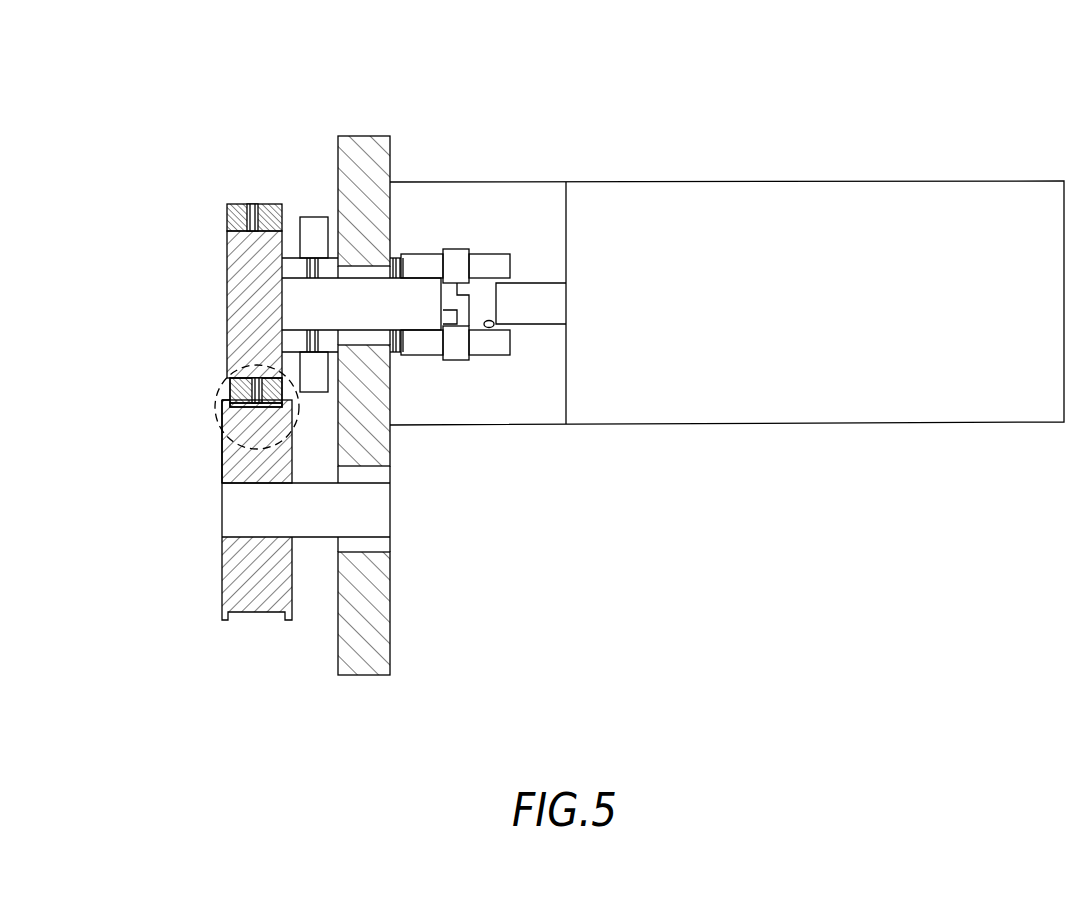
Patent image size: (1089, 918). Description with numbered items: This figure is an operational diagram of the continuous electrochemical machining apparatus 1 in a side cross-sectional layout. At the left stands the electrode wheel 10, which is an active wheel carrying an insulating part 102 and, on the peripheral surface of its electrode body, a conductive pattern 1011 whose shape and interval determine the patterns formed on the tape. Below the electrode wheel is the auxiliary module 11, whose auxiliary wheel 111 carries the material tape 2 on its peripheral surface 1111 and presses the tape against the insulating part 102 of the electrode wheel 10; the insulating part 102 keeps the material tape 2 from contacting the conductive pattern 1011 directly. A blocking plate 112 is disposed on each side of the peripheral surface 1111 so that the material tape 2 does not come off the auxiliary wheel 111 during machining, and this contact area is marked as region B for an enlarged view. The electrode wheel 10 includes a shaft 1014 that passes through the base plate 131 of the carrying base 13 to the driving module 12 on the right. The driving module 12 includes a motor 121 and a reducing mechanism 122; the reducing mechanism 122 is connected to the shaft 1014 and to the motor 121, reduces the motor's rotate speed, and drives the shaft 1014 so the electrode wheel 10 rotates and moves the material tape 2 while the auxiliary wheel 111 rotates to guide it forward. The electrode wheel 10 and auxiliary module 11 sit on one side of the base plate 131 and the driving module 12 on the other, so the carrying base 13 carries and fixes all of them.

The continuous electrochemical machining apparatus 1 is at (1052, 35).
The electrode wheel 10 is at (222, 192).
The auxiliary module 11 is at (187, 510).
The driving module 12 is at (815, 165).
The carrying base 13 is at (397, 125).
The insulating part 102 is at (250, 403).
The conductive pattern 1011 is at (247, 403).
The shaft 1014 is at (295, 292).
The auxiliary wheel 111 is at (222, 457).
The blocking plate 112 is at (232, 405).
The peripheral surface 1111 is at (222, 402).
The motor 121 is at (614, 183).
The reducing mechanism 122 is at (448, 249).
The base plate 131 is at (362, 137).
The material tape 2 is at (232, 407).
The region B is at (217, 415).